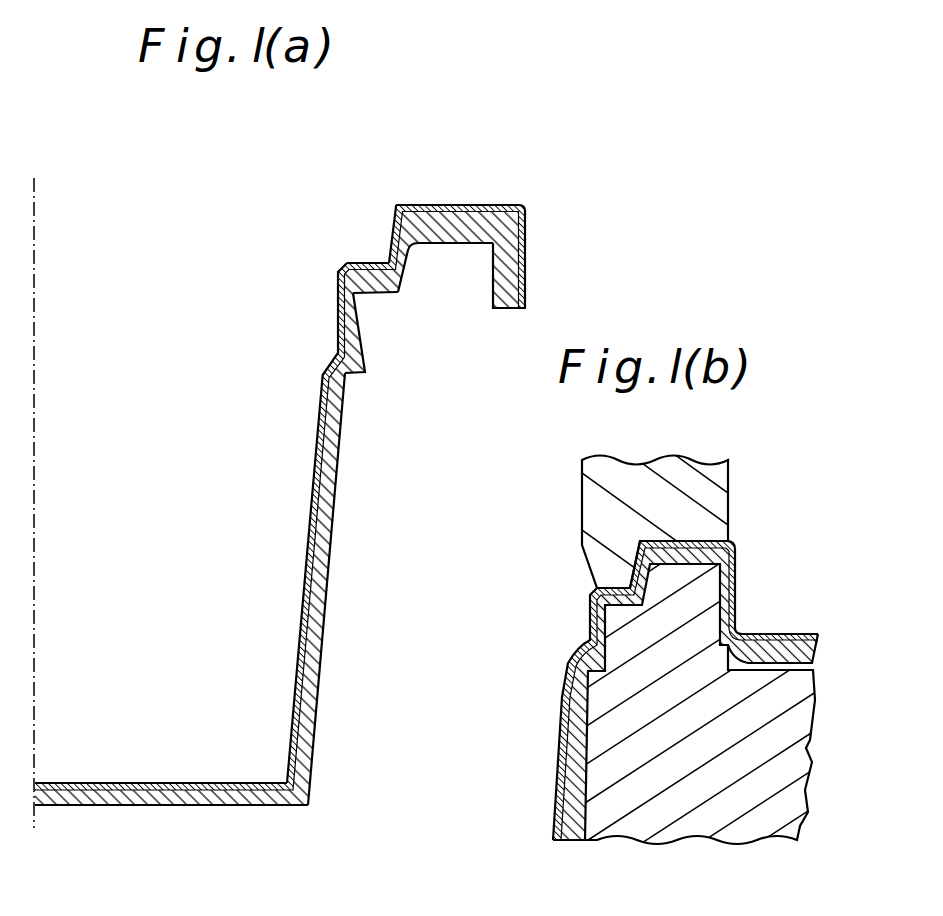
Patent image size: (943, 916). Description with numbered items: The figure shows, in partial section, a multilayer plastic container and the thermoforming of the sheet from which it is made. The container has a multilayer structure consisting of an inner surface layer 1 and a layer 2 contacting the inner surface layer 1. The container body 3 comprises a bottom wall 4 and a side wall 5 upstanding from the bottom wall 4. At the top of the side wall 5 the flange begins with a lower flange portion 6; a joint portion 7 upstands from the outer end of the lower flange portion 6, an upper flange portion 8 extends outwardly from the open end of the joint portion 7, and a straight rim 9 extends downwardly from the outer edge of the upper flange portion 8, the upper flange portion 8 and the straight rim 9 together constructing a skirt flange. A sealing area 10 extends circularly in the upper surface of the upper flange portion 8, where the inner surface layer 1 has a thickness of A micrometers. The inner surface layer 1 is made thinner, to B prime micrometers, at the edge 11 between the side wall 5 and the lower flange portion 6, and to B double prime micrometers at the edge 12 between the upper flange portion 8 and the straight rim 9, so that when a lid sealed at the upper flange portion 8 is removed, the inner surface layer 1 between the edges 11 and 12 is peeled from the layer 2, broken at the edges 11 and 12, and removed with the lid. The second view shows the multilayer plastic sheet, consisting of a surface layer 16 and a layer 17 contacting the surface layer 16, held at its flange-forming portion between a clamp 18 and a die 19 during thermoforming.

In FIG. 1A, the inner surface layer 1 is at (313, 473).
In FIG. 1A, the layer contacting the inner surface layer 2 is at (333, 470).
In FIG. 1A, the container body 3 is at (327, 587).
In FIG. 1A, the bottom wall 4 is at (172, 783).
In FIG. 1A, the side wall 5 is at (305, 593).
In FIG. 1A, the lower flange portion 6 is at (374, 294).
In FIG. 1A, the joint portion 7 is at (402, 268).
In FIG. 1A, the upper flange portion 8 is at (460, 244).
In FIG. 1A, the straight rim 9 is at (526, 284).
In FIG. 1A, the sealing area 10 is at (417, 203).
In FIG. 1A, the edge between the side wall and the lower flange portion 11 is at (345, 265).
In FIG. 1A, the edge between the upper flange portion and the straight rim 12 is at (528, 208).
In FIG. 1B, the surface layer 16 is at (562, 693).
In FIG. 1B, the layer contacting the surface layer 17 is at (568, 753).
In FIG. 1B, the clamp 18 is at (678, 463).
In FIG. 1B, the die 19 is at (752, 762).